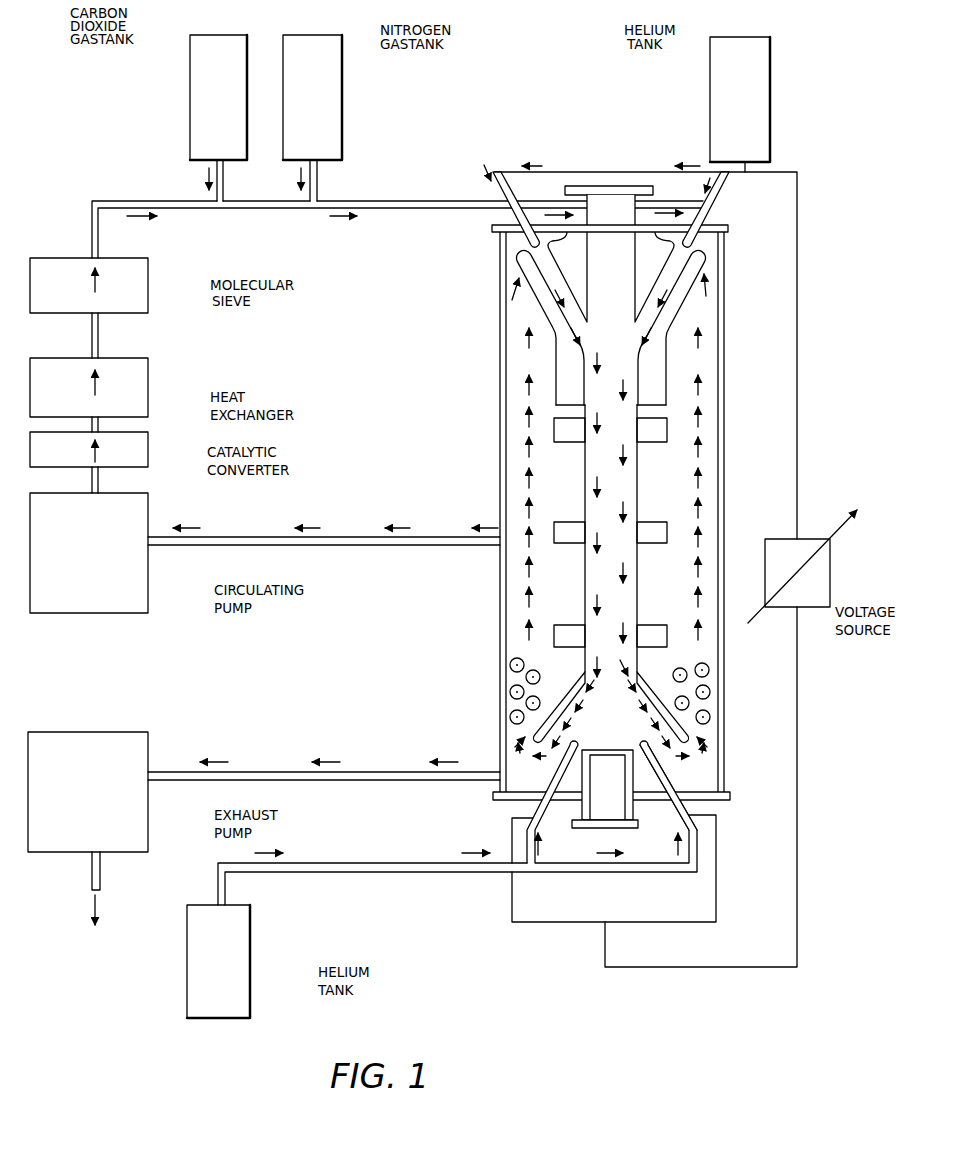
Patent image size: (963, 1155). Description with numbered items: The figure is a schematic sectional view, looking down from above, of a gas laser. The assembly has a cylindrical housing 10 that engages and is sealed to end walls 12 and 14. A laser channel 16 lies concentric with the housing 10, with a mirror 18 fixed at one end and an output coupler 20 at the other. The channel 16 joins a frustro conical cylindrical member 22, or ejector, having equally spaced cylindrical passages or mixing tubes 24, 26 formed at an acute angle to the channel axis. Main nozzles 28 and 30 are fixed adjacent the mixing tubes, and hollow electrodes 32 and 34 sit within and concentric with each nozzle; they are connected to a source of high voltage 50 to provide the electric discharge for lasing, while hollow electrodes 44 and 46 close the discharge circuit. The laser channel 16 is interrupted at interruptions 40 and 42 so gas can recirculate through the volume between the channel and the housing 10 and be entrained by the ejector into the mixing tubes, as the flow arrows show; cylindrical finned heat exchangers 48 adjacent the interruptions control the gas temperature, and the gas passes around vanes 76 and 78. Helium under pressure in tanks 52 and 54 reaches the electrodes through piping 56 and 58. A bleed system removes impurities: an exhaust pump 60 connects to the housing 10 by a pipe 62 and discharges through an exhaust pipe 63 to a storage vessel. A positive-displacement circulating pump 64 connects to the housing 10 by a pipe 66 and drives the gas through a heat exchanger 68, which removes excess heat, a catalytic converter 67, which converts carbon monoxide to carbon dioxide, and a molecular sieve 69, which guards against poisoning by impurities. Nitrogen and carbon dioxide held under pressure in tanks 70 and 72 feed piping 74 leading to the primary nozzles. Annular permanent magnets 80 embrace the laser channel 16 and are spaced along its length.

The cylindrical housing 10 is at (724, 450).
The end wall 12 is at (730, 229).
The end wall 14 is at (730, 797).
The laser channel 16 is at (637, 497).
The mirror 18 is at (565, 191).
The output coupler 20 is at (640, 826).
The frustro conical cylindrical member 22 is at (668, 368).
The mixing tube 24 is at (546, 290).
The mixing tube 26 is at (668, 290).
The main nozzle 28 is at (757, 251).
The main nozzle 30 is at (546, 247).
The hollow electrode 32 is at (707, 205).
The hollow electrode 34 is at (513, 214).
The interruption 40 is at (690, 752).
The interruption 42 is at (530, 727).
The hollow electrode 44 is at (660, 773).
The hollow electrode 46 is at (525, 786).
The cylindrical finned heat exchangers 48 is at (610, 686).
The source of high voltage 50 is at (832, 590).
The helium tank 52 is at (710, 53).
The helium tank 54 is at (250, 977).
The piping 56 is at (518, 165).
The piping 58 is at (352, 874).
The exhaust pump 60 is at (148, 815).
The pipe 62 is at (368, 771).
The exhaust pipe 63 is at (100, 880).
The circulating pump 64 is at (148, 590).
The pipe 66 is at (356, 536).
The catalytic converter 67 is at (148, 453).
The heat exchanger 68 is at (148, 395).
The molecular sieve 69 is at (148, 283).
The nitrogen gas tank 70 is at (342, 60).
The carbon dioxide gas tank 72 is at (190, 57).
The piping 74 is at (387, 210).
The vane 76 is at (693, 739).
The vane 78 is at (522, 740).
The annular magnet 80 is at (667, 531).